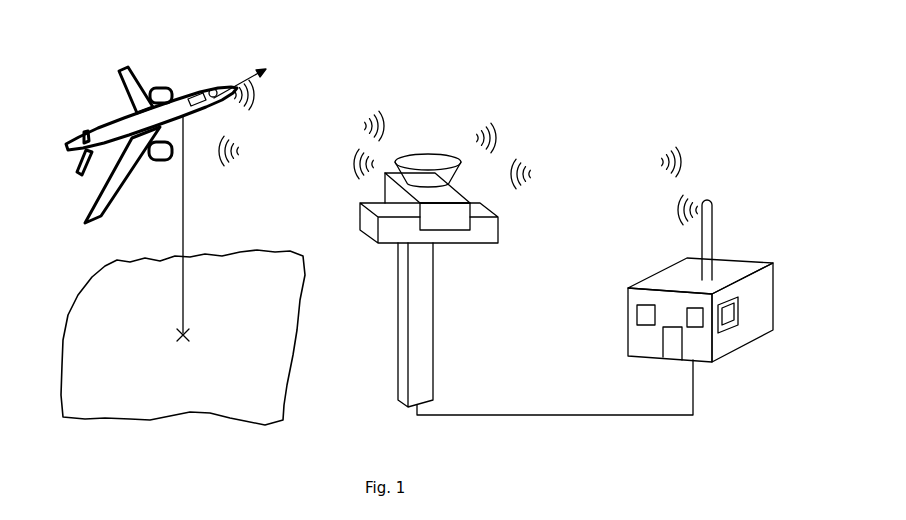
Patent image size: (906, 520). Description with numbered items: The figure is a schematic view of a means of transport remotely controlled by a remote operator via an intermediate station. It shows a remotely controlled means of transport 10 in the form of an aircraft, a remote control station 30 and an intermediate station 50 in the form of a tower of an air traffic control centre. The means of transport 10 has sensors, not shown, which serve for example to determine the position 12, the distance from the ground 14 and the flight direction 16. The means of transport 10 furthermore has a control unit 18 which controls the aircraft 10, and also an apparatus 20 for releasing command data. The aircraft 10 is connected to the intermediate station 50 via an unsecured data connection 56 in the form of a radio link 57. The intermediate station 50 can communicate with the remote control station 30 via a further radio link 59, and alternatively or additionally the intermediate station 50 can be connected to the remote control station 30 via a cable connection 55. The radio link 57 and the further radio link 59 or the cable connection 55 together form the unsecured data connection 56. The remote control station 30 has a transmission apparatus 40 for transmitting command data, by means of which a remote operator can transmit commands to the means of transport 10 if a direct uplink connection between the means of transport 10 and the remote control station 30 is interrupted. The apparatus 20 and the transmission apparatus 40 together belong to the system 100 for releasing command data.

The remotely controlled means of transport 10 is at (122, 125).
The position 12 is at (190, 336).
The distance from the ground 14 is at (185, 210).
The flight direction 16 is at (256, 67).
The control unit 18 is at (215, 89).
The apparatus for releasing command data 20 is at (195, 90).
The remote control station 30 is at (757, 303).
The transmission apparatus 40 is at (730, 320).
The intermediate station 50 is at (420, 310).
The cable connection 55 is at (543, 415).
The unsecured data connection 56 is at (407, 113).
The radio link 57 is at (237, 157).
The further radio link 59 is at (497, 125).
The system for releasing command data 100 is at (736, 145).